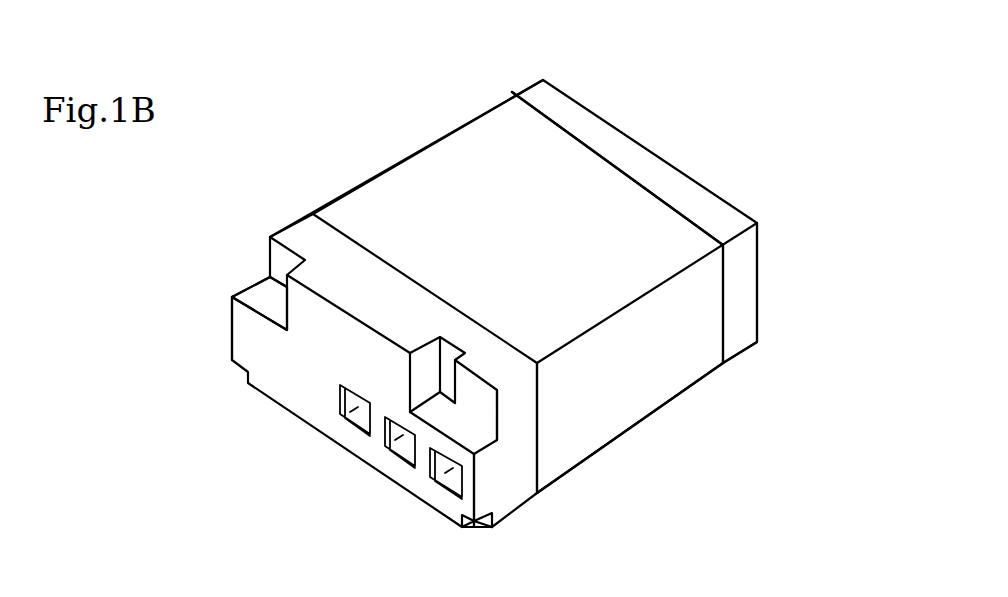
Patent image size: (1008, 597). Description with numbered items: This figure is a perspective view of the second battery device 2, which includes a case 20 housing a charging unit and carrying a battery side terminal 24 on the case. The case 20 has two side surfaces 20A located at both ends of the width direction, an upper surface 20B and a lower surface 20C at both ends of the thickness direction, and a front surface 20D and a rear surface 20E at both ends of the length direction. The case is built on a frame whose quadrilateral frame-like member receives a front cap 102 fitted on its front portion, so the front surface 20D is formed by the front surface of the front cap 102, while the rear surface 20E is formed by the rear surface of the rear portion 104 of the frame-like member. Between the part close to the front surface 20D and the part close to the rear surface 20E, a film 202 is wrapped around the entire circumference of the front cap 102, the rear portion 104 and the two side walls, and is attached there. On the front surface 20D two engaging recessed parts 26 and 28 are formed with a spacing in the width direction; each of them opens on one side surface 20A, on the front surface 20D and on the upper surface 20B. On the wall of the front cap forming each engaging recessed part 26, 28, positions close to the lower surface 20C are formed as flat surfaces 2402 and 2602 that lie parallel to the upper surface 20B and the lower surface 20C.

The second battery device 2 is at (600, 97).
The case 20 is at (361, 183).
The side surface 20A is at (417, 152).
The upper surface 20B is at (477, 137).
The lower surface 20C is at (633, 430).
The front surface 20D is at (300, 376).
The rear surface 20E is at (673, 162).
The battery side terminal 24 is at (448, 473).
The engaging recessed part 26 is at (468, 388).
The engaging recessed part 28 is at (280, 258).
The front cap 102 is at (232, 330).
The rear portion 104 is at (757, 285).
The film 202 is at (675, 233).
The flat surface 2402 is at (465, 433).
The flat surface 2602 is at (263, 297).